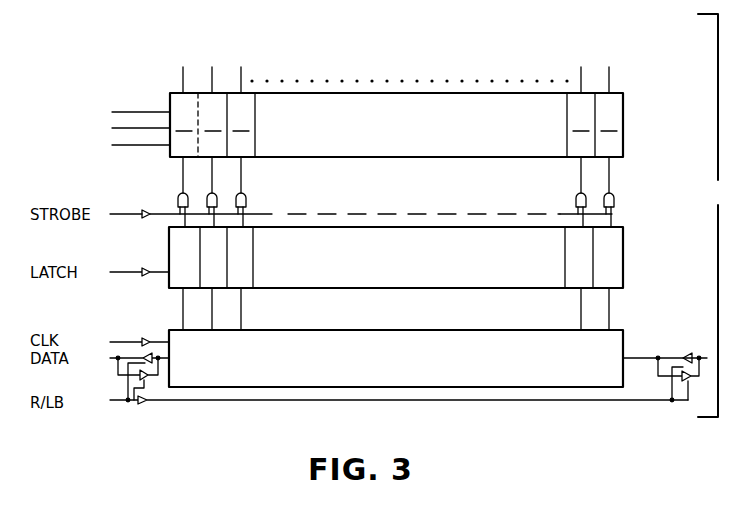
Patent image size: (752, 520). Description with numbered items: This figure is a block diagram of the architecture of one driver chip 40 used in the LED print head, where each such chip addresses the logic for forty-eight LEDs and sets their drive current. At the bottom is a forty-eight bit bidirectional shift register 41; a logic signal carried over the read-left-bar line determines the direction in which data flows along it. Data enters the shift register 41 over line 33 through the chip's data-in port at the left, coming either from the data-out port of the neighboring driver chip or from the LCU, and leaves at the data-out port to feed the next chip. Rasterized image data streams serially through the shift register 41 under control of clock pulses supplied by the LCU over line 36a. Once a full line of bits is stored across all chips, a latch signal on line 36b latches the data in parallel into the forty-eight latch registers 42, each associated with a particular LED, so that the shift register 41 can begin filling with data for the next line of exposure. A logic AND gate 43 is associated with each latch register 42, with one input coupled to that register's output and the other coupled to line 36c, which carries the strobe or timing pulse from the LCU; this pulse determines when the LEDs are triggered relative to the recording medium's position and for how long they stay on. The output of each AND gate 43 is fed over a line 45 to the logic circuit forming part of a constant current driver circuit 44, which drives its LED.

The line 33 is at (168, 365).
The line 36a is at (155, 342).
The line 36b is at (158, 272).
The line 36c is at (155, 214).
The driver chip 40 is at (708, 215).
The bidirectional shift register 41 is at (623, 335).
The latch register 42 is at (623, 262).
The logic AND gate 43 is at (185, 194).
The constant current driver circuit 44 is at (396, 125).
The line 45 is at (178, 167).